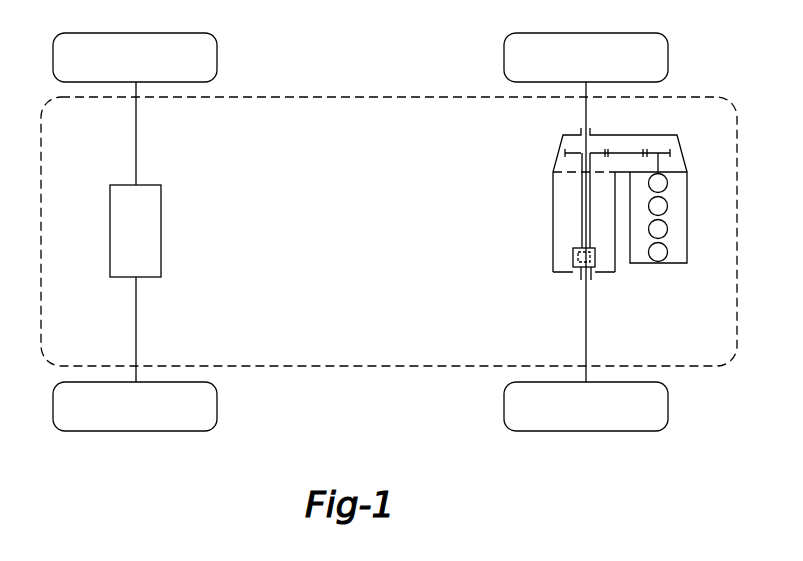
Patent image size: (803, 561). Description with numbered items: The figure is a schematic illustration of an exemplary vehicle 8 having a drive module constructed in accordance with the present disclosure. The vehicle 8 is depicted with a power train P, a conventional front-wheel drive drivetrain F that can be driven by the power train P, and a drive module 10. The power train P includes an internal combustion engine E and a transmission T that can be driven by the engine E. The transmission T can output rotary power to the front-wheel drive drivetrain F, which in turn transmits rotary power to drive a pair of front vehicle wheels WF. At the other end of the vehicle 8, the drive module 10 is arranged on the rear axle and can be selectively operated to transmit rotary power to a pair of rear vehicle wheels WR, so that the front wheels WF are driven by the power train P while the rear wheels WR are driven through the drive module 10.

The vehicle 8 is at (56, 441).
The rear vehicle wheels WR is at (217, 57).
The front vehicle wheels WF is at (504, 57).
The drive module 10 is at (167, 221).
The transmission T is at (670, 147).
The internal combustion engine E is at (677, 257).
The power train P is at (690, 207).
The front-wheel drive drivetrain F is at (574, 260).